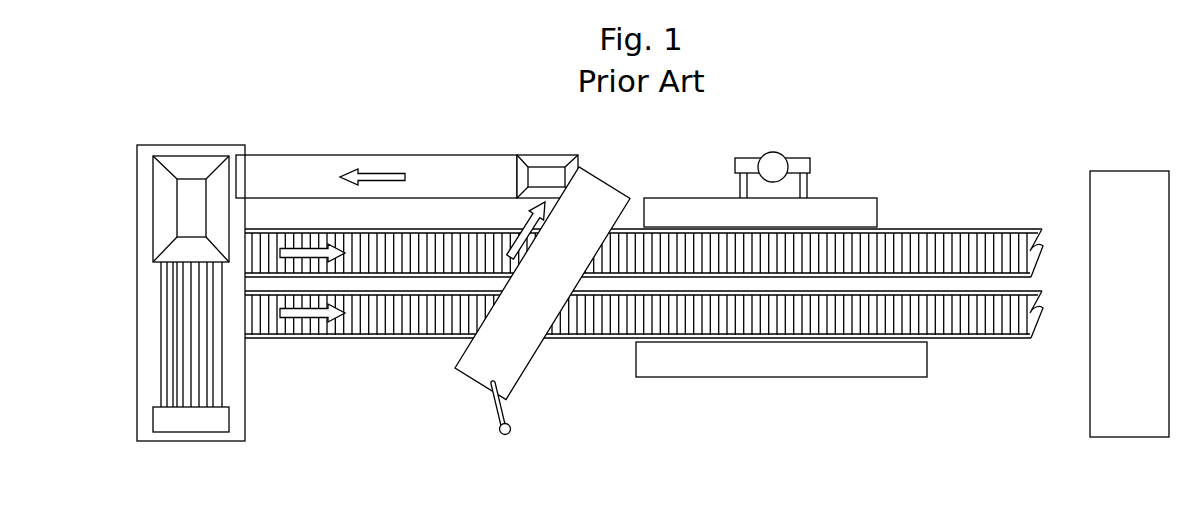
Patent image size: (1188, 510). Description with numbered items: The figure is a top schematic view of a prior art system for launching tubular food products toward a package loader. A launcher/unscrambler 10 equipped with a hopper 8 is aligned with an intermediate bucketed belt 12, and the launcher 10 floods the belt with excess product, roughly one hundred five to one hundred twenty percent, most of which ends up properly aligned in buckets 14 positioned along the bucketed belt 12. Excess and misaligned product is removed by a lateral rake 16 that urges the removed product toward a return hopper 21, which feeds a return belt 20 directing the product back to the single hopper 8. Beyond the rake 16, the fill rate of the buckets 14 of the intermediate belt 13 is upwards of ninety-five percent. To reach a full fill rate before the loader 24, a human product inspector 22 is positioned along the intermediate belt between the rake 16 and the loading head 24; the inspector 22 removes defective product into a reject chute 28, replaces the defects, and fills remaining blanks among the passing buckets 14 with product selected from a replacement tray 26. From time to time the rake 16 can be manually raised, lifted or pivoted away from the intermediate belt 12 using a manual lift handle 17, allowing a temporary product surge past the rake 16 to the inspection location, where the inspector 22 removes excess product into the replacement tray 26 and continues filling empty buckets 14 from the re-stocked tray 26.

The hopper 8 is at (195, 170).
The launcher/unscrambler 10 is at (137, 320).
The intermediate bucketed belt 12 is at (644, 315).
The intermediate belt 13 is at (562, 345).
The buckets 14 is at (357, 333).
The lateral rake 16 is at (477, 387).
The manual lift handle 17 is at (498, 437).
The return belt 20 is at (422, 155).
The return hopper 21 is at (542, 155).
The human product inspector 22 is at (778, 152).
The loader 24 is at (1122, 270).
The replacement tray 26 is at (763, 222).
The reject chute 28 is at (775, 368).